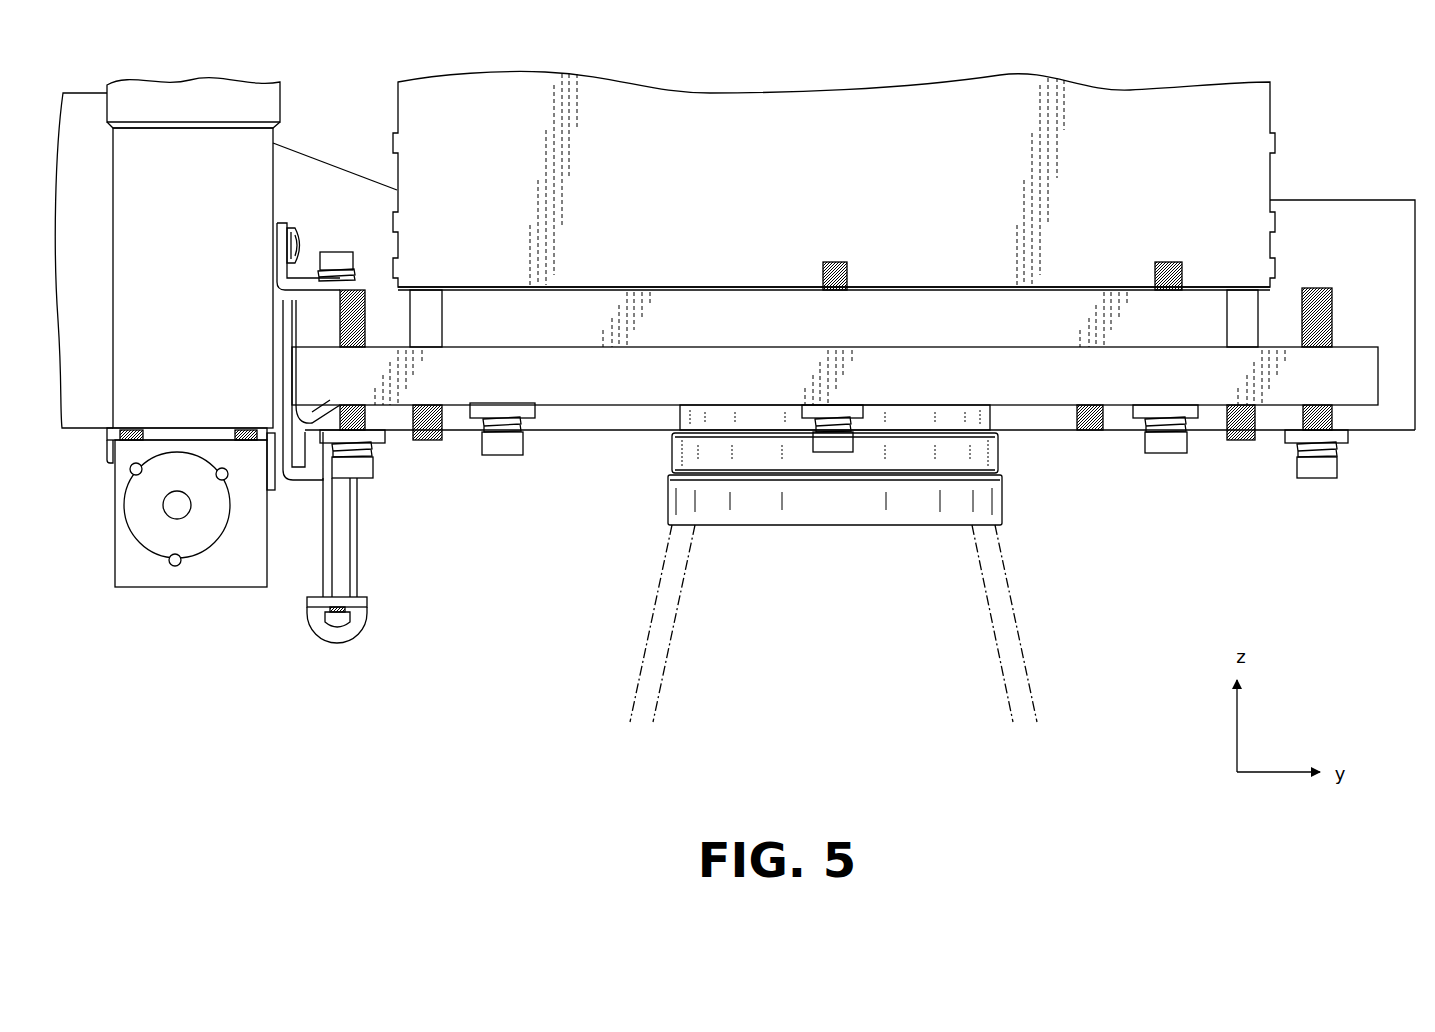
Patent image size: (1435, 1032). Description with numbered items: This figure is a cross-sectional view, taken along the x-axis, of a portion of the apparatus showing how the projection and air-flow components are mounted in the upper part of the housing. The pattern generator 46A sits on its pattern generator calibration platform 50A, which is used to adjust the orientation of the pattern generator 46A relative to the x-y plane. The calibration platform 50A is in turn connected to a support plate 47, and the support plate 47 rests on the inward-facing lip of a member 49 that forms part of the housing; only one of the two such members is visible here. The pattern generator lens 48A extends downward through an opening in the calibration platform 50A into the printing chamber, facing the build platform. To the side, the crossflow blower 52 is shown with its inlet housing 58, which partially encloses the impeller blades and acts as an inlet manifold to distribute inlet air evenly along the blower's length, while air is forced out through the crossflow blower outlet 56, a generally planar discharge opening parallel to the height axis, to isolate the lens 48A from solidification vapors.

The inlet housing 58 is at (193, 253).
The pattern generator 46A is at (834, 180).
The pattern generator calibration platform 50A is at (834, 317).
The support plate 47 is at (853, 401).
The member 49 is at (1322, 215).
The crossflow blower 52 is at (178, 587).
The crossflow blower outlet 56 is at (268, 563).
The pattern generator lens 48A is at (833, 525).